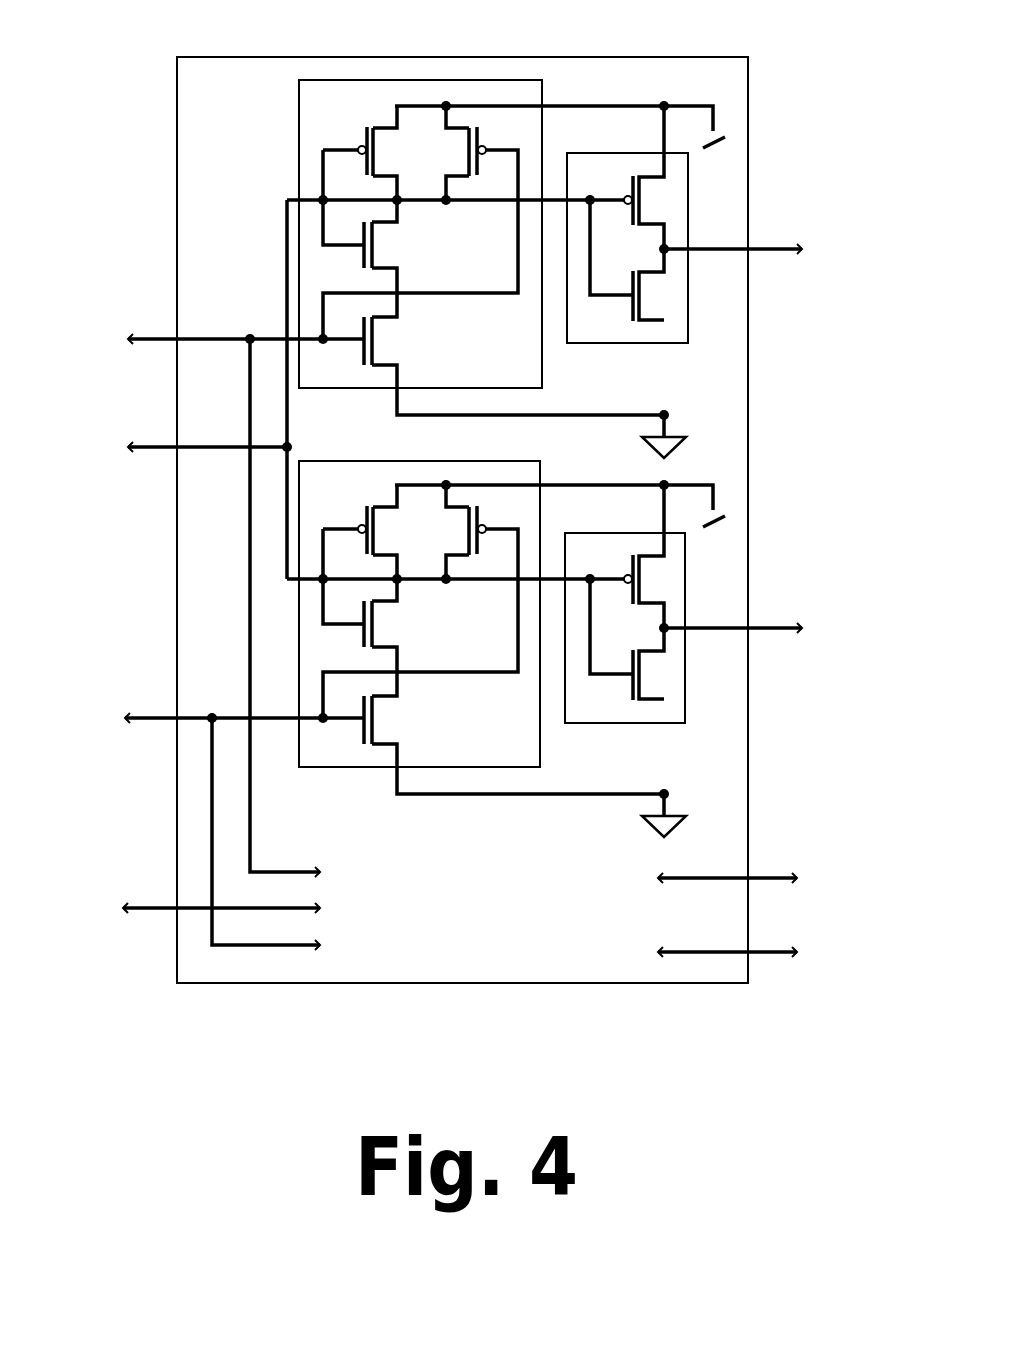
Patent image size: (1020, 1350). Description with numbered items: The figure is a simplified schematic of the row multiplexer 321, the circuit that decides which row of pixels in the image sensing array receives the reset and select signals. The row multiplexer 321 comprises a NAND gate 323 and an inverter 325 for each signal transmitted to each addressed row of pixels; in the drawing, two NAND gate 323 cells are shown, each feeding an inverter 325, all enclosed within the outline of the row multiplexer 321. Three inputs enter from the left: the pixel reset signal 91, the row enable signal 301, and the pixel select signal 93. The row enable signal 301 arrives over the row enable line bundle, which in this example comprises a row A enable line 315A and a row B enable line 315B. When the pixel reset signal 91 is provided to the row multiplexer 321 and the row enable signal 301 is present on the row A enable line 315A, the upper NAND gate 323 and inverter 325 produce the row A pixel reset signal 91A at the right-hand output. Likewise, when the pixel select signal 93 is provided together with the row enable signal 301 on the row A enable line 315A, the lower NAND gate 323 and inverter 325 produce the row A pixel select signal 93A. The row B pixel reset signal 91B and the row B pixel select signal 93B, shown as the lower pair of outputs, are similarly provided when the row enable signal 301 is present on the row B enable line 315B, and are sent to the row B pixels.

The row multiplexer 321 is at (640, 57).
The NAND gate 323 is at (348, 80).
The inverter 325 is at (688, 323).
The pixel reset signal 91 is at (80, 320).
The pixel select signal 93 is at (73, 697).
The row enable signal 301 is at (183, 586).
The row A enable line 315A is at (155, 448).
The row B enable line 315B is at (157, 908).
The row A pixel reset signal 91A is at (860, 232).
The row A pixel select signal 93A is at (862, 612).
The row B pixel reset signal 91B is at (857, 867).
The row B pixel select signal 93B is at (862, 972).